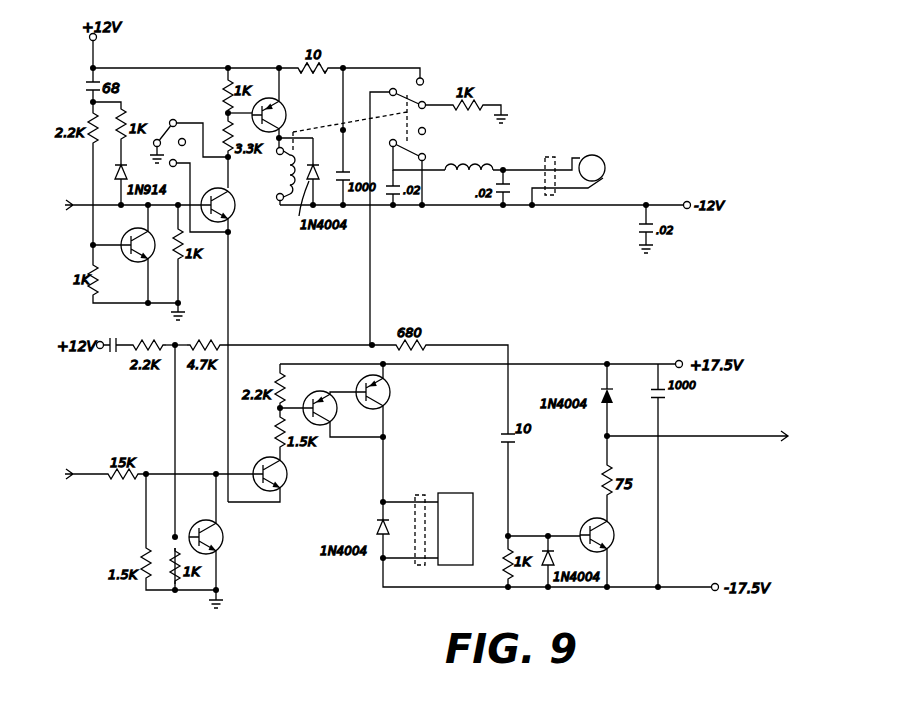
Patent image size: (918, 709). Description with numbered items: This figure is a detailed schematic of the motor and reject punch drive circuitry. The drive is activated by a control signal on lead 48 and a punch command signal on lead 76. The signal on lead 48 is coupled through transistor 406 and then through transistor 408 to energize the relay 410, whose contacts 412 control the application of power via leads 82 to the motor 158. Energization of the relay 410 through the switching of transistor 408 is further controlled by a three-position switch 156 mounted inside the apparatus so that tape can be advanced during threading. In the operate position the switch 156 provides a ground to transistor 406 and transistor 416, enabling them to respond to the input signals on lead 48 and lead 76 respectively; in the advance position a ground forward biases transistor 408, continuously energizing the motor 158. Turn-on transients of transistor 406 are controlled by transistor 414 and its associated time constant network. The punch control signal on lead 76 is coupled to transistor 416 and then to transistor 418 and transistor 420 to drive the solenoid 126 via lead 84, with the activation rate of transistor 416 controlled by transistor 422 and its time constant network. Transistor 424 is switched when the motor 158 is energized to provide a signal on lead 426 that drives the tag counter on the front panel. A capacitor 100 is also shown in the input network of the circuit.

The lead 48 is at (126, 195).
The lead 76 is at (85, 463).
The leads 82 is at (553, 157).
The lead 84 is at (418, 495).
The capacitor 100 is at (117, 338).
The solenoid 126 is at (456, 493).
The three-position switch 156 is at (163, 123).
The motor 158 is at (602, 157).
The transistor 406 is at (235, 205).
The transistor 408 is at (285, 108).
The relay 410 is at (284, 173).
The relay contacts 412 is at (430, 91).
The transistor 414 is at (128, 234).
The transistor 416 is at (289, 474).
The transistor 418 is at (311, 395).
The transistor 420 is at (390, 387).
The transistor 422 is at (222, 546).
The transistor 424 is at (585, 523).
The lead 426 is at (724, 433).